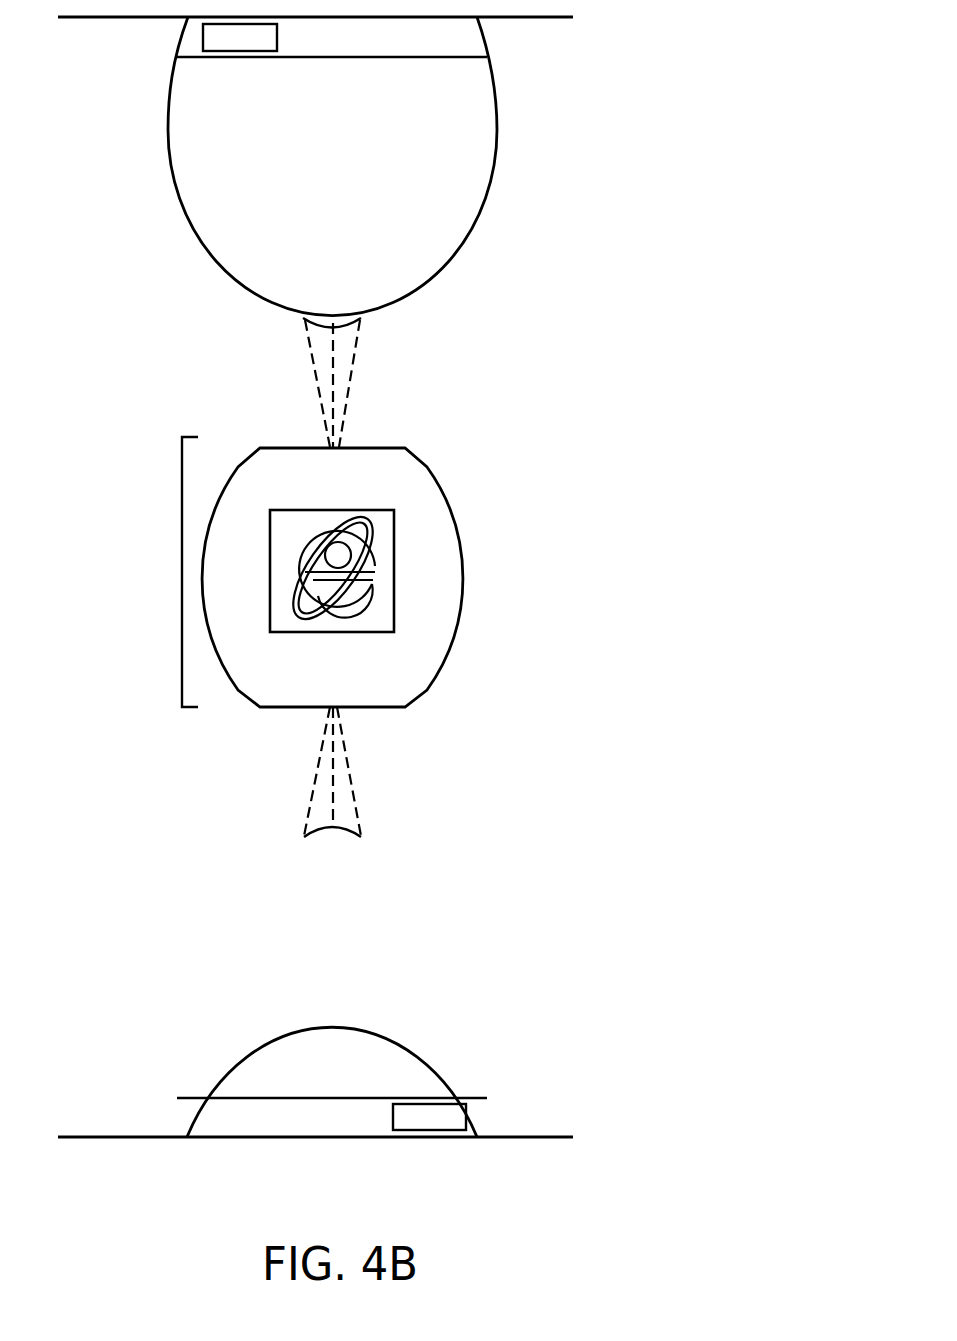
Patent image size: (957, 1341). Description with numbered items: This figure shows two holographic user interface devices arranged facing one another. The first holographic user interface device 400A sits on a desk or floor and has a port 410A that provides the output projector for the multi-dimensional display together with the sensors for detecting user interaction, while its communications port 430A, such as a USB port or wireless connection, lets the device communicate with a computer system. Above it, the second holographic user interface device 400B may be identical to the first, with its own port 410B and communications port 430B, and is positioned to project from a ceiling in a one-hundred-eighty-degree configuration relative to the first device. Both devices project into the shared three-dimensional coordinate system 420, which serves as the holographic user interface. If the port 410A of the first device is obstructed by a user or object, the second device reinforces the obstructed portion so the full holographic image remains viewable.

The holographic user interface device 400A is at (483, 964).
The holographic user interface device 400B is at (487, 188).
The port 410A is at (361, 836).
The port 410B is at (352, 322).
The 3-D coordinate system 420 is at (187, 708).
The communications port 430A is at (462, 1107).
The communications port 430B is at (203, 33).